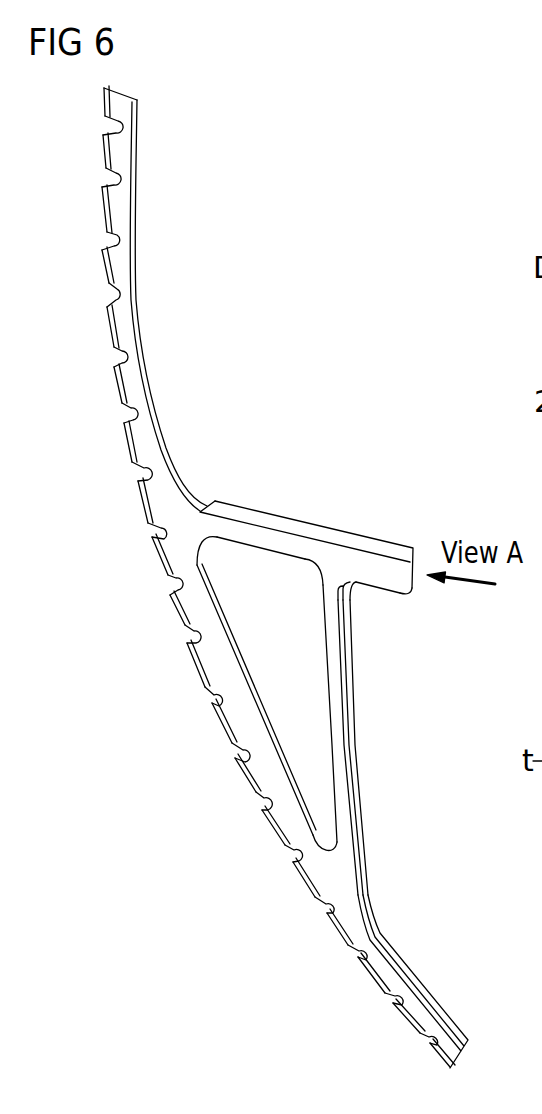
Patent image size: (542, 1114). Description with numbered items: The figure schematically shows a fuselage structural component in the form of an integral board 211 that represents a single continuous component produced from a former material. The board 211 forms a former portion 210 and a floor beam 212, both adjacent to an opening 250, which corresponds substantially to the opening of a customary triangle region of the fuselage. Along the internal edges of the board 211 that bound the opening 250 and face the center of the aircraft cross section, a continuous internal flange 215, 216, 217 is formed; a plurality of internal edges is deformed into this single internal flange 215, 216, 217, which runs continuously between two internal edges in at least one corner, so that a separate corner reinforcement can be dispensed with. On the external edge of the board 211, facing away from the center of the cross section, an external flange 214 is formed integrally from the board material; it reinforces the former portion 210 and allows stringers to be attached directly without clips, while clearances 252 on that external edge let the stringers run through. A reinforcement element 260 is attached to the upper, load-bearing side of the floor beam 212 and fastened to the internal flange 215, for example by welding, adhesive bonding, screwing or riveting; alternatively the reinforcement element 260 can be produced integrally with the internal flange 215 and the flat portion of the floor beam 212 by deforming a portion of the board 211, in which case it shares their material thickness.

The former portion 210 is at (176, 409).
The board 211 is at (125, 324).
The floor beam 212 is at (318, 552).
The external flange 214 is at (127, 448).
The internal flange 215 is at (240, 552).
The internal flange 216 is at (353, 737).
The internal flange 217 is at (303, 827).
The opening 250 is at (267, 702).
The clearances 252 is at (110, 240).
The reinforcement element 260 is at (371, 525).